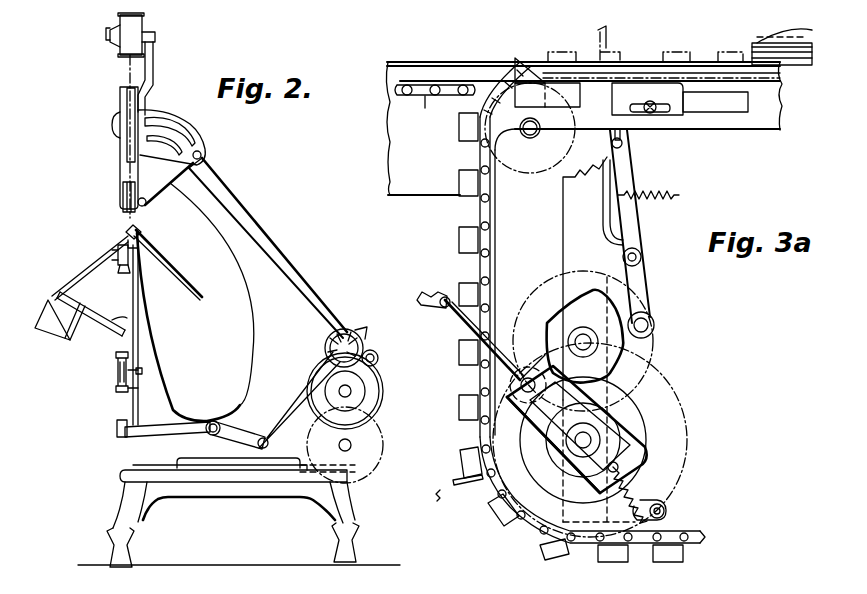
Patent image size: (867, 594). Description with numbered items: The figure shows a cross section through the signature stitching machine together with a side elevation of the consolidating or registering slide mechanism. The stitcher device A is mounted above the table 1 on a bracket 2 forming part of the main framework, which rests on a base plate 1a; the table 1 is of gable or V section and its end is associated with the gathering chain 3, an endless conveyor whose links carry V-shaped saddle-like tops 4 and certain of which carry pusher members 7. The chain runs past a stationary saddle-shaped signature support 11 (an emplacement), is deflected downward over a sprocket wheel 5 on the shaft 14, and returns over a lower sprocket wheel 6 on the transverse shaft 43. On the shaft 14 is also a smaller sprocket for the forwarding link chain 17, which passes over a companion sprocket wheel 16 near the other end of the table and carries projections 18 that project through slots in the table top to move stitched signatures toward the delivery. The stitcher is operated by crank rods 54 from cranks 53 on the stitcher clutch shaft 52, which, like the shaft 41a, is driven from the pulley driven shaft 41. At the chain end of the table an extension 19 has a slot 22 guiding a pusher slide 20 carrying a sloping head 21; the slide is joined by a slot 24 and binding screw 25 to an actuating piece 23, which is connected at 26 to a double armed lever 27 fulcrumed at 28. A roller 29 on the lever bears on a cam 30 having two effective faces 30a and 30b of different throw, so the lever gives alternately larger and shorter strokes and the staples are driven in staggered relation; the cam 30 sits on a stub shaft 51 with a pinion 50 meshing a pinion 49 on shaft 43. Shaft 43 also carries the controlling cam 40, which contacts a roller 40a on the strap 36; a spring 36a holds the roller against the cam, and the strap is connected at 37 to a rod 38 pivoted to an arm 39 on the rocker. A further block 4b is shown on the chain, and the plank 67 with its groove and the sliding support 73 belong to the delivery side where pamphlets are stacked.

In FIG. 2, the stitcher device A is at (188, 138).
In FIG. 2, the table 1 is at (88, 272).
In FIG. 2, the base plate 1a is at (283, 478).
In FIG. 2, the bracket 2 is at (262, 298).
In FIG. 3A, the endless conveyor chain 3 is at (472, 358).
In FIG. 3A, the saddle-like link tops 4 is at (670, 57).
In FIG. 3A, the block 4b is at (462, 407).
In FIG. 3A, the sprocket wheel 5 is at (536, 172).
In FIG. 3A, the lower sprocket wheel 6 is at (668, 448).
In FIG. 3A, the pusher members 7 is at (606, 40).
In FIG. 3A, the stationary saddle-shaped signature support 11 is at (775, 37).
In FIG. 3A, the shaft 14 is at (530, 128).
In FIG. 2, the companion sprocket wheel 16 is at (118, 252).
In FIG. 2, the endless link chain 17 is at (142, 268).
In FIG. 3A, the endless link chain 17 is at (431, 112).
In FIG. 2, the projections 18 is at (138, 238).
In FIG. 3A, the table extension 19 is at (766, 118).
In FIG. 3A, the pusher slide 20 is at (566, 90).
In FIG. 3A, the head 21 is at (525, 70).
In FIG. 3A, the slot 22 is at (713, 112).
In FIG. 3A, the actuating piece 23 is at (683, 118).
In FIG. 3A, the slot 24 is at (662, 113).
In FIG. 3A, the binding screw 25 is at (649, 100).
In FIG. 3A, the connection 26 is at (612, 152).
In FIG. 3A, the double armed lever 27 is at (633, 226).
In FIG. 3A, the fulcrum 28 is at (642, 257).
In FIG. 3A, the roller 29 is at (654, 318).
In FIG. 3A, the cam 30 is at (624, 355).
In FIG. 3A, the effective cam face 30a is at (603, 302).
In FIG. 3A, the effective cam face 30b is at (548, 356).
In FIG. 3A, the strap 36 is at (592, 415).
In FIG. 3A, the spring 36a is at (664, 503).
In FIG. 3A, the connection 37 is at (482, 413).
In FIG. 3A, the rod 38 is at (467, 323).
In FIG. 3A, the arm 39 is at (422, 300).
In FIG. 3A, the controlling cam 40 is at (642, 455).
In FIG. 3A, the roller 40a is at (482, 482).
In FIG. 2, the pulley driven shaft 41 is at (352, 391).
In FIG. 2, the shaft 41a is at (352, 444).
In FIG. 3A, the transverse shaft 43 is at (573, 457).
In FIG. 3A, the pinion 49 is at (612, 428).
In FIG. 3A, the pinion 50 is at (652, 345).
In FIG. 3A, the stub shaft 51 is at (578, 337).
In FIG. 2, the stitcher clutch shaft 52 is at (352, 332).
In FIG. 2, the cranks 53 is at (374, 352).
In FIG. 2, the crank rods 54 is at (296, 272).
In FIG. 2, the plank 67 is at (122, 310).
In FIG. 2, the sliding support 73 is at (52, 328).